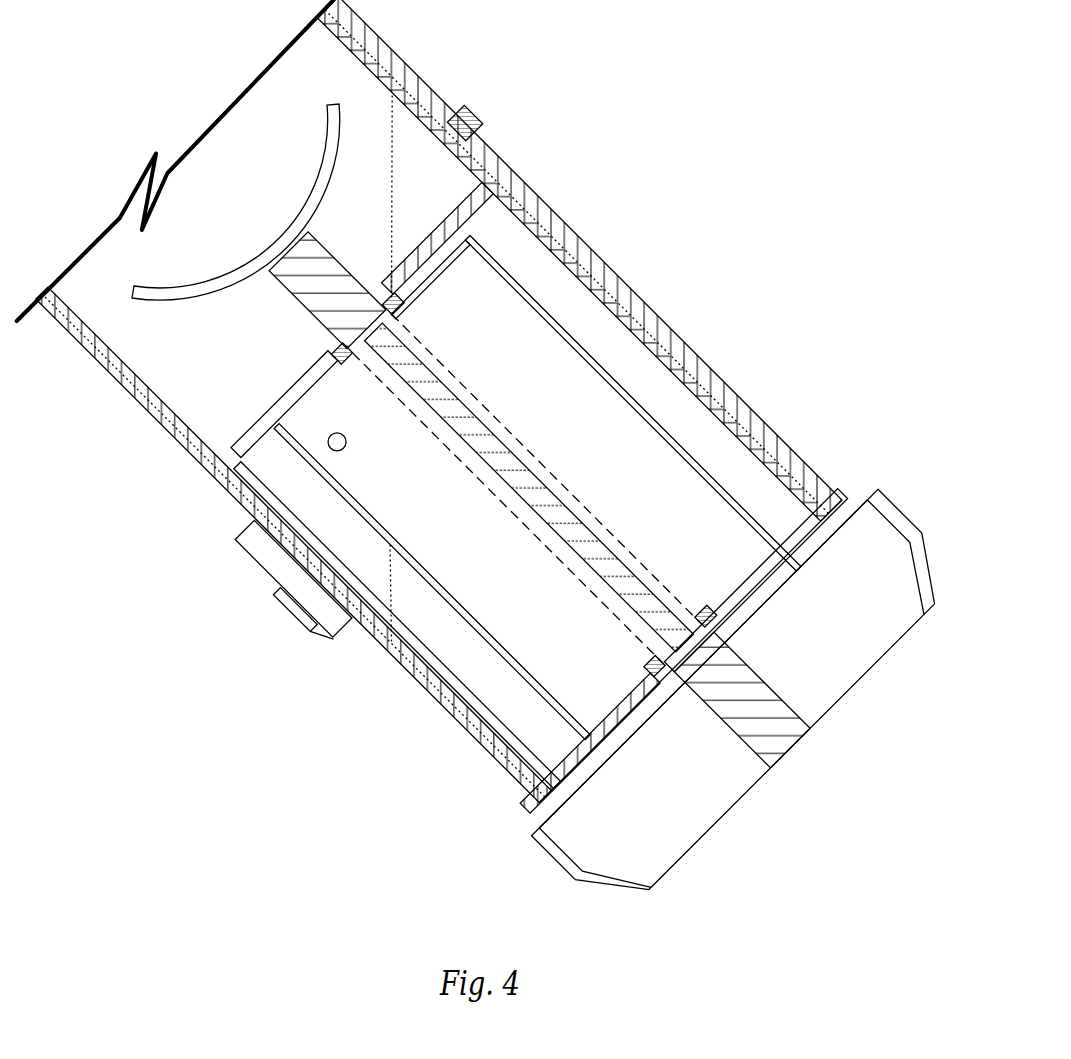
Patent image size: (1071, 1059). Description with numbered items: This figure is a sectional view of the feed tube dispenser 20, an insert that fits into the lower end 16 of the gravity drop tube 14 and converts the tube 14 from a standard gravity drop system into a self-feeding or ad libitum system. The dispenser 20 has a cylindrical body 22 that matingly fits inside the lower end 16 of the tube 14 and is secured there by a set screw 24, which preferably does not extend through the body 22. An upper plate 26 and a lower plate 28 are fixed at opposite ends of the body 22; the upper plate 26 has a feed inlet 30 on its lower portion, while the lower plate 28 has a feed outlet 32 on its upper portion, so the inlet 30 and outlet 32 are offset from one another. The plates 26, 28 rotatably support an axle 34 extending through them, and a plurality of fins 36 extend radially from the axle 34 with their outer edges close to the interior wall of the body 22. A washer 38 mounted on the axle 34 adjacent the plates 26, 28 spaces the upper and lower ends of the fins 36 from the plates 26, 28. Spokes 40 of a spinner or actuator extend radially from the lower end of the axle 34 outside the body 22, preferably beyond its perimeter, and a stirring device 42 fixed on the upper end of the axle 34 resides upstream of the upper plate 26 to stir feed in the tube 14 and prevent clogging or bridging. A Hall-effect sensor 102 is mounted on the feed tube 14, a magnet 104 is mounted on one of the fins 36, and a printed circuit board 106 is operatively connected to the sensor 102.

The gravity drop tube 14 is at (252, 502).
The lower end 16 is at (458, 722).
The feed tube dispenser 20 is at (548, 512).
The cylindrical body 22 is at (463, 652).
The set screw 24 is at (484, 115).
The upper plate 26 is at (520, 235).
The lower plate 28 is at (597, 743).
The feed inlet 30 is at (264, 414).
The feed outlet 32 is at (770, 563).
The axle 34 is at (793, 745).
The fins 36 is at (470, 282).
The washer 38 is at (343, 350).
The spokes 40 is at (840, 660).
The stirring device 42 is at (328, 152).
The Hall-effect sensor 102 is at (258, 564).
The magnet 104 is at (330, 445).
The printed circuit board 106 is at (300, 615).